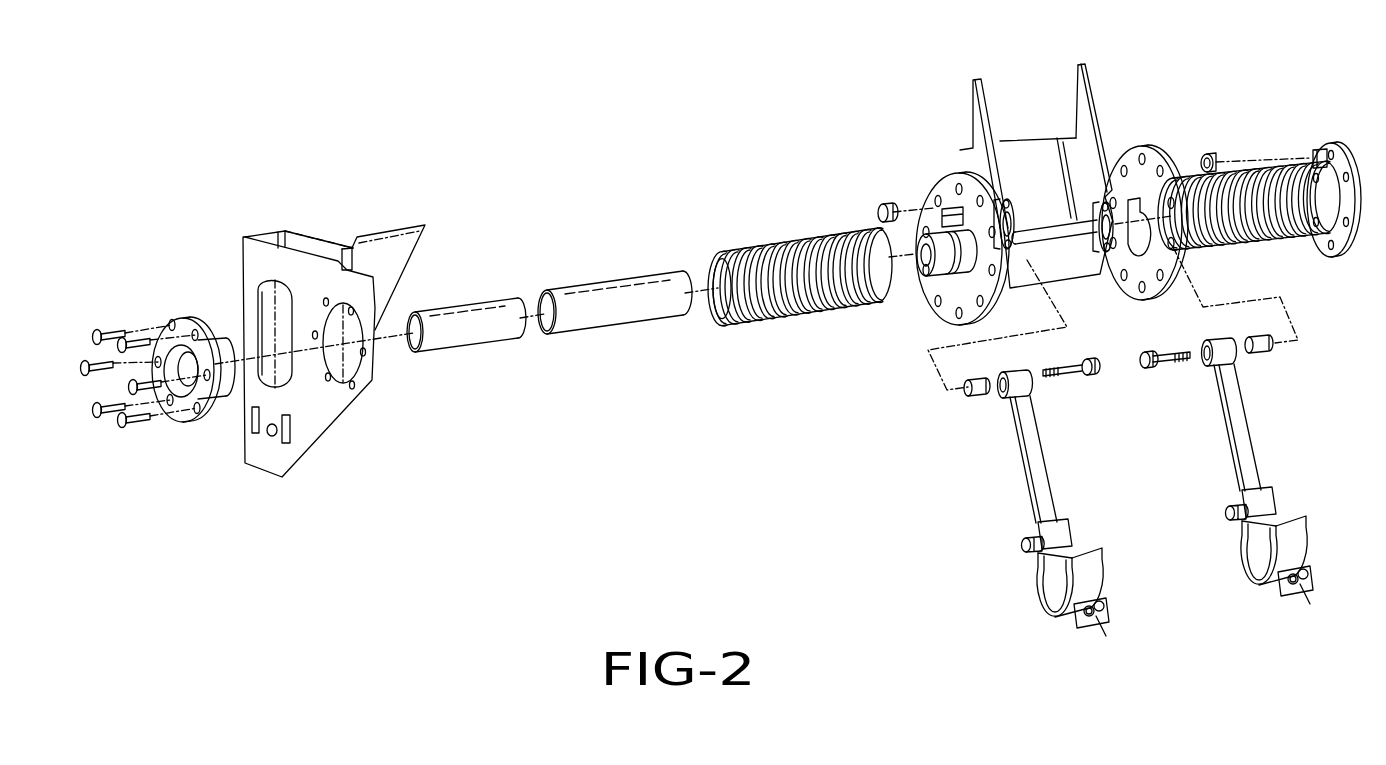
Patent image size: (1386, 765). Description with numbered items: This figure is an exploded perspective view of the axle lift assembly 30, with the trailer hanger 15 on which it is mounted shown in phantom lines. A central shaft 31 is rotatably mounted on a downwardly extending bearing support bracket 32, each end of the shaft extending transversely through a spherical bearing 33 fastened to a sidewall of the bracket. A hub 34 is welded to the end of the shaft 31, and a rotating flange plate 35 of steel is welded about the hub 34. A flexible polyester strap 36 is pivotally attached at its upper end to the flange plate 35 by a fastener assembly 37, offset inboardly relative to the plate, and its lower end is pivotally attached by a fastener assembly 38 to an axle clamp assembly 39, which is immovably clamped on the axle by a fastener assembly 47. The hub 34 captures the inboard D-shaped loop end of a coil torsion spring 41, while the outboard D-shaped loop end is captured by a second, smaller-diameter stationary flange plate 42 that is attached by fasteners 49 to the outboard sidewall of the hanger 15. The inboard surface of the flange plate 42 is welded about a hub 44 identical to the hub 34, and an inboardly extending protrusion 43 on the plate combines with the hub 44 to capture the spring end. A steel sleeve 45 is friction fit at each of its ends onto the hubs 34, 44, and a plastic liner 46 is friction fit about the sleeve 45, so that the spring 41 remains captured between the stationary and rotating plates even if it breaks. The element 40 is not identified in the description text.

The hanger 15 is at (258, 233).
The axle lift assembly 30 is at (544, 190).
The central shaft 31 is at (1053, 239).
The bearing support bracket 32 is at (1038, 141).
The spherical bearing 33 is at (1095, 208).
The hub 34 is at (940, 268).
The flange plate 35 is at (950, 184).
The strap 36 is at (1032, 467).
The fastener assembly 37 is at (1067, 373).
The fastener assembly 38 is at (1023, 547).
The axle clamp assembly 39 is at (1052, 588).
The key and nut 40 is at (948, 209).
The coil torsion spring 41 is at (792, 241).
The flange plate 42 is at (177, 325).
The protrusion 43 is at (1316, 158).
The hub 44 is at (222, 350).
The steel sleeve 45 is at (463, 334).
The plastic liner 46 is at (602, 311).
The fastener assembly 47 is at (1097, 624).
The fasteners 49 is at (122, 341).